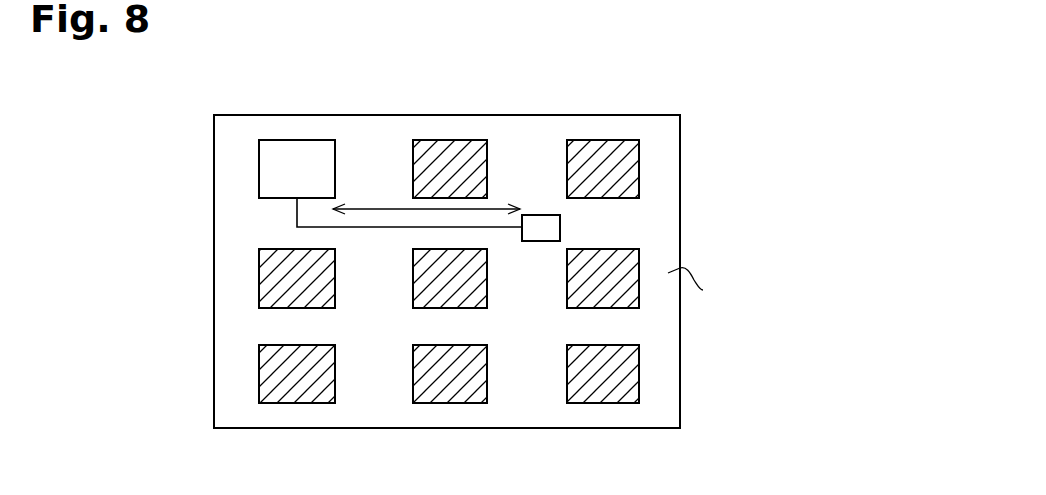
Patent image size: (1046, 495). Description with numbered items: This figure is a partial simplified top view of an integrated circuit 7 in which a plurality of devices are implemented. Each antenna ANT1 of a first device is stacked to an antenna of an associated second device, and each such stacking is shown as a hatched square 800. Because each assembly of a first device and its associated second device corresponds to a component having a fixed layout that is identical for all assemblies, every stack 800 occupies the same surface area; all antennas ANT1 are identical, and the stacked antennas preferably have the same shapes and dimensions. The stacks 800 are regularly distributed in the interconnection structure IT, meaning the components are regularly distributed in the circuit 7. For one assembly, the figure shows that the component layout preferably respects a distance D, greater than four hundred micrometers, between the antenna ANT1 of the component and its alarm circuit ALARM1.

The stack of antennas 800 is at (279, 140).
The circuit 7 is at (724, 163).
The antenna ANT1 is at (390, 183).
The circuit ALARM1 is at (547, 232).
The distance D is at (380, 209).
The interconnection structure IT is at (700, 288).